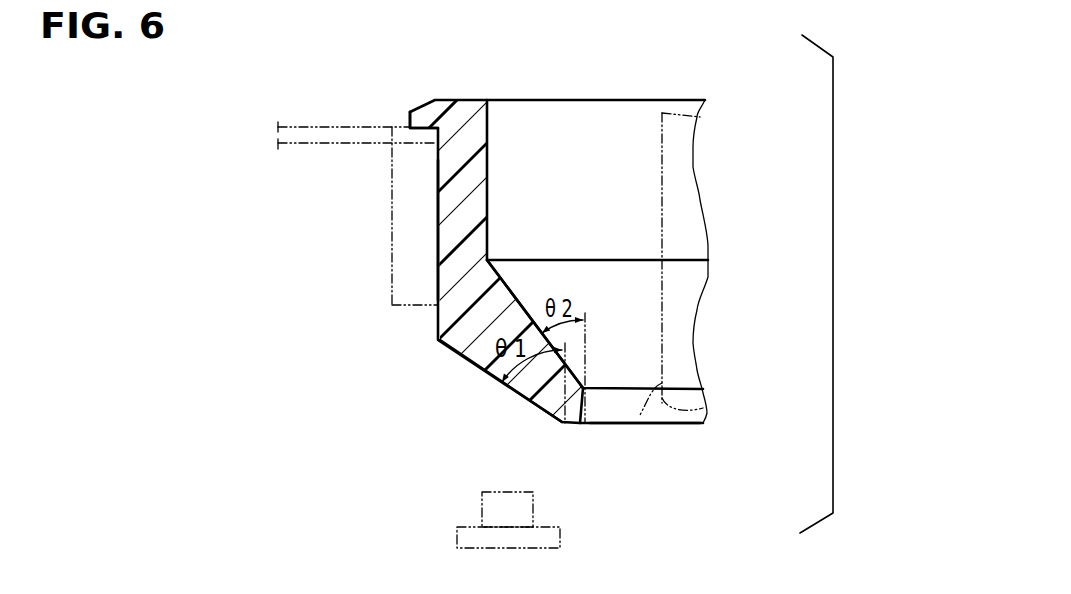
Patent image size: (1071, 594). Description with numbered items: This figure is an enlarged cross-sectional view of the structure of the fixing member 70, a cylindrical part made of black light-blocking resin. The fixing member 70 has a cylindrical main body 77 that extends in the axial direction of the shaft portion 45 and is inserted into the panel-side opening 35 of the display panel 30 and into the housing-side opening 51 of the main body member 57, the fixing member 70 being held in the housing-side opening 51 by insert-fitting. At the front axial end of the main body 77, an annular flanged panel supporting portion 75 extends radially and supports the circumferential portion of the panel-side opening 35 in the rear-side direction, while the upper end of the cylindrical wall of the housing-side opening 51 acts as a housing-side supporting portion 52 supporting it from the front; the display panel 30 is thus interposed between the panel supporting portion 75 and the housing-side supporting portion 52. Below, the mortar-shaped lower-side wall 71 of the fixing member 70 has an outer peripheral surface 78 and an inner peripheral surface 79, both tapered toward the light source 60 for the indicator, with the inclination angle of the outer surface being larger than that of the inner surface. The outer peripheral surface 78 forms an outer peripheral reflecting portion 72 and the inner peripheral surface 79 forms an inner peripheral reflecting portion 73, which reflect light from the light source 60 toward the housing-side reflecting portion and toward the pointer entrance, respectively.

The display panel 30 is at (293, 124).
The housing-side supporting portion 52 is at (383, 126).
The panel supporting portion 75 is at (428, 124).
The panel-side opening 35 is at (457, 130).
The housing-side opening 51 is at (440, 202).
The fixing member 70 is at (703, 44).
The lower-side wall 71 is at (677, 328).
The main body member 57 is at (392, 215).
The main body 77 is at (437, 228).
The inner peripheral reflecting portion 73 is at (410, 324).
The inner peripheral surface 79 is at (528, 280).
The outer peripheral reflecting portion 72 is at (400, 381).
The outer peripheral surface 78 is at (470, 364).
The shaft portion 45 is at (638, 427).
The light source 60 is at (482, 498).